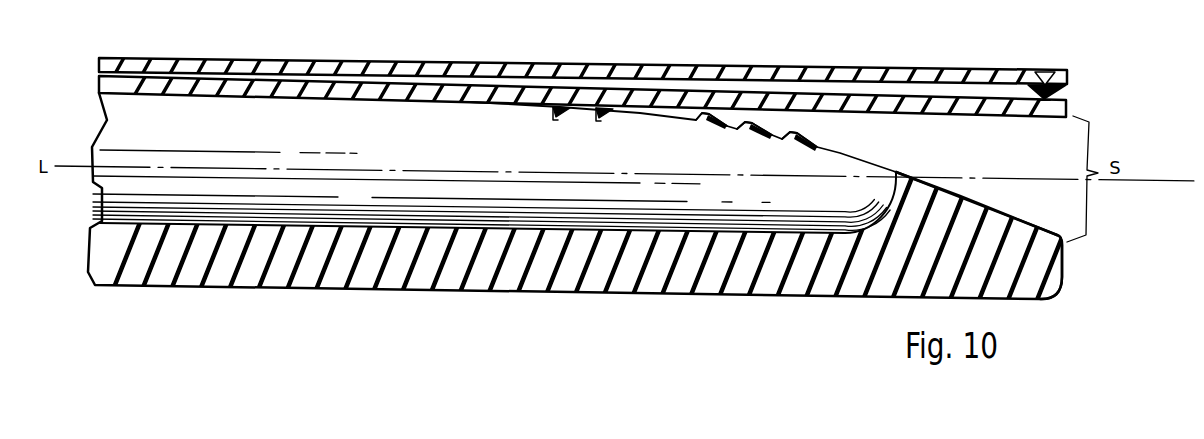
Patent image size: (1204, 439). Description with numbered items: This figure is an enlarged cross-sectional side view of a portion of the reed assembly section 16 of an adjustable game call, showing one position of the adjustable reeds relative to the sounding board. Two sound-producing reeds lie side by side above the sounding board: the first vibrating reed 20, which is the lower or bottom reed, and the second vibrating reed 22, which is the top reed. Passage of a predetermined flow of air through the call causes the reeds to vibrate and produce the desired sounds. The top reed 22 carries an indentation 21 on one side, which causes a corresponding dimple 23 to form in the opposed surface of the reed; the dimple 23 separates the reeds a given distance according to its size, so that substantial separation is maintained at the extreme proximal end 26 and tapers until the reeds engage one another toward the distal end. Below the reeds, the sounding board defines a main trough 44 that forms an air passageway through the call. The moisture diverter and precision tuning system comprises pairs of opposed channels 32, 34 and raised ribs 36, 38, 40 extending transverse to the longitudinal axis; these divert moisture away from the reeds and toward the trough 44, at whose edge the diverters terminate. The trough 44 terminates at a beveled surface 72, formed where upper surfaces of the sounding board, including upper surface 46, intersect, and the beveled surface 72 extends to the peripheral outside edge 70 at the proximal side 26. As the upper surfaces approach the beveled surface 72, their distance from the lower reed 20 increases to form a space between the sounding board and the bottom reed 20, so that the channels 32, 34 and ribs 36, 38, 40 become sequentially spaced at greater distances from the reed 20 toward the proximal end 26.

The reed assembly section 16 is at (841, 54).
The first vibrating reed 20 is at (928, 104).
The indentation 21 is at (1048, 72).
The second vibrating reed 22 is at (637, 68).
The dimple 23 is at (1058, 98).
The proximal end 26 is at (1074, 282).
The channel 32 is at (557, 122).
The channel 34 is at (604, 122).
The raised rib 36 is at (704, 122).
The raised rib 38 is at (748, 130).
The raised rib 40 is at (794, 148).
The main trough 44 is at (491, 190).
The upper surface 46 is at (667, 114).
The peripheral edge 70 is at (1068, 262).
The beveled surface 72 is at (968, 185).